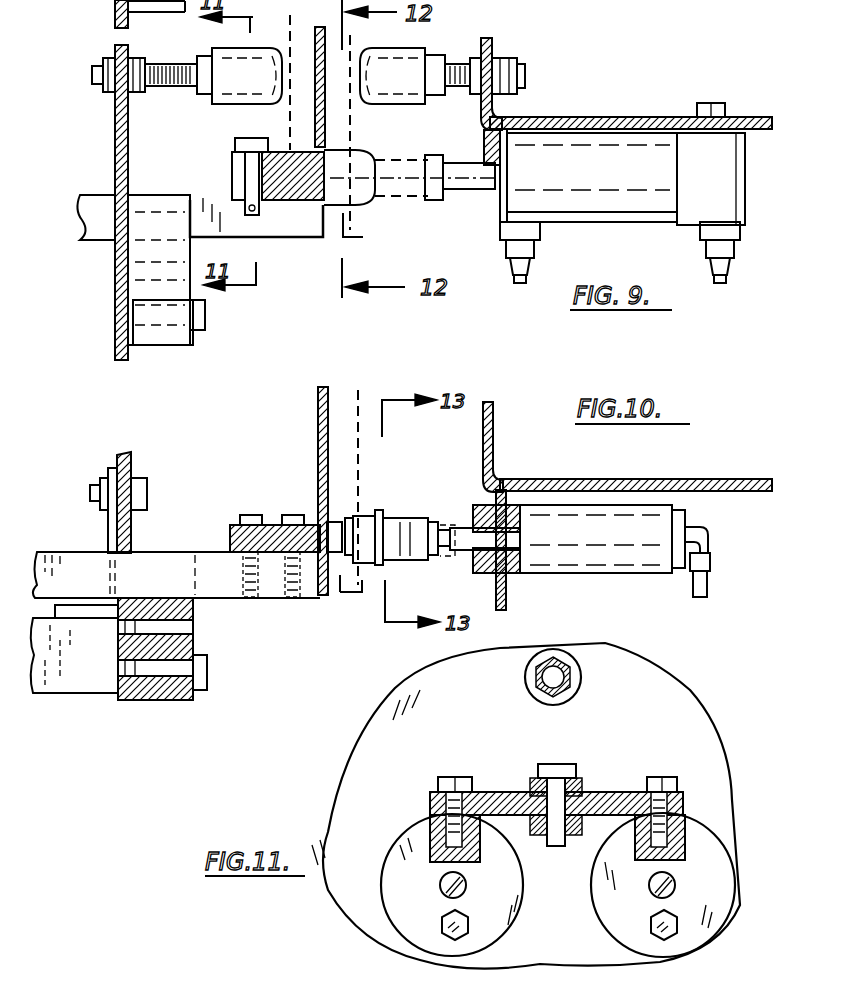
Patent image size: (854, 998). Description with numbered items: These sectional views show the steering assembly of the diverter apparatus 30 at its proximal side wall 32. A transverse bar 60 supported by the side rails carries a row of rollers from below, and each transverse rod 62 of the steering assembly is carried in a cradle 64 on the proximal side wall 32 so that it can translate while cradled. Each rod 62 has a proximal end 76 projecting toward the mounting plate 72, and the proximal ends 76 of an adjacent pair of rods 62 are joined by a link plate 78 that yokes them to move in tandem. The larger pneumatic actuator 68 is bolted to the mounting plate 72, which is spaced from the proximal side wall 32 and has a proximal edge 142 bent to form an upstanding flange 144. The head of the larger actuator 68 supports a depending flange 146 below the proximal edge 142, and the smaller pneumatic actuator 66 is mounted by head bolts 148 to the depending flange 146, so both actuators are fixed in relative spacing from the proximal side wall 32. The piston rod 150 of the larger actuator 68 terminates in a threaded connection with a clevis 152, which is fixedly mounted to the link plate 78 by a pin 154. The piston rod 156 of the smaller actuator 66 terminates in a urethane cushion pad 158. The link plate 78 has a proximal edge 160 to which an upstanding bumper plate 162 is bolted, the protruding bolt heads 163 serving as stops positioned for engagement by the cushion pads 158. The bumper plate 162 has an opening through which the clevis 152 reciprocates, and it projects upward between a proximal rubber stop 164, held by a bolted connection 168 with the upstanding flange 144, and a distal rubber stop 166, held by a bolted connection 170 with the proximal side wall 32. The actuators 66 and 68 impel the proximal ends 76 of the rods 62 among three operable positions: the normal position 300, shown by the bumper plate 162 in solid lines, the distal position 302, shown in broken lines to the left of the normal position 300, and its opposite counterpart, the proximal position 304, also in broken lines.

In FIG. 9, the diverter apparatus 30 is at (657, 68).
In FIG. 10, the diverter apparatus 30 is at (730, 432).
In FIG. 11, the diverter apparatus 30 is at (738, 700).
In FIG. 9, the proximal side wall 32 is at (115, 143).
In FIG. 10, the proximal side wall 32 is at (122, 460).
In FIG. 11, the proximal side wall 32 is at (662, 708).
In FIG. 10, the transverse bar 60 is at (80, 695).
In FIG. 9, the transverse rod 62 is at (92, 230).
In FIG. 10, the transverse rod 62 is at (75, 552).
In FIG. 11, the transverse rod 62 is at (432, 835).
In FIG. 9, the cradle 64 is at (165, 338).
In FIG. 10, the cradle 64 is at (175, 700).
In FIG. 11, the cradle 64 is at (410, 920).
In FIG. 10, the 1 1/16-inch pneumatic actuator 66 is at (610, 560).
In FIG. 9, the 1 1/8-inch pneumatic actuator 68 is at (615, 210).
In FIG. 9, the mounting plate 72 is at (600, 117).
In FIG. 10, the mounting plate 72 is at (685, 478).
In FIG. 9, the proximal end 76 is at (296, 240).
In FIG. 10, the proximal end 76 is at (275, 598).
In FIG. 9, the link plate 78 is at (232, 180).
In FIG. 10, the link plate 78 is at (268, 522).
In FIG. 11, the link plate 78 is at (605, 795).
In FIG. 9, the proximal edge 142 is at (487, 118).
In FIG. 10, the proximal edge 142 is at (498, 478).
In FIG. 9, the upstanding flange 144 is at (492, 45).
In FIG. 10, the upstanding flange 144 is at (495, 412).
In FIG. 9, the depending flange 146 is at (500, 240).
In FIG. 10, the depending flange 146 is at (508, 598).
In FIG. 10, the head bolt 148 is at (482, 573).
In FIG. 9, the piston rod 150 is at (465, 192).
In FIG. 9, the clevis 152 is at (355, 205).
In FIG. 11, the clevis 152 is at (530, 782).
In FIG. 9, the pin 154 is at (240, 140).
In FIG. 11, the pin 154 is at (568, 764).
In FIG. 10, the piston rod 156 is at (465, 550).
In FIG. 10, the urethane cushion pad 158 is at (384, 514).
In FIG. 9, the proximal edge 160 is at (330, 240).
In FIG. 10, the proximal edge 160 is at (323, 491).
In FIG. 9, the upstanding bumper plate 162 is at (352, 125).
In FIG. 10, the upstanding bumper plate 162 is at (358, 388).
In FIG. 10, the bolt head 163 is at (365, 516).
In FIG. 9, the proximal rubber stop 164 is at (418, 50).
In FIG. 9, the distal rubber stop 166 is at (215, 104).
In FIG. 11, the distal rubber stop 166 is at (580, 692).
In FIG. 9, the bolted connection 168 is at (520, 76).
In FIG. 9, the bolted connection 170 is at (100, 96).
In FIG. 11, the bolted connection 170 is at (528, 700).
In FIG. 9, the normal position 300 is at (328, 6).
In FIG. 9, the distal position 302 is at (299, 75).
In FIG. 9, the proximal position 304 is at (360, 30).